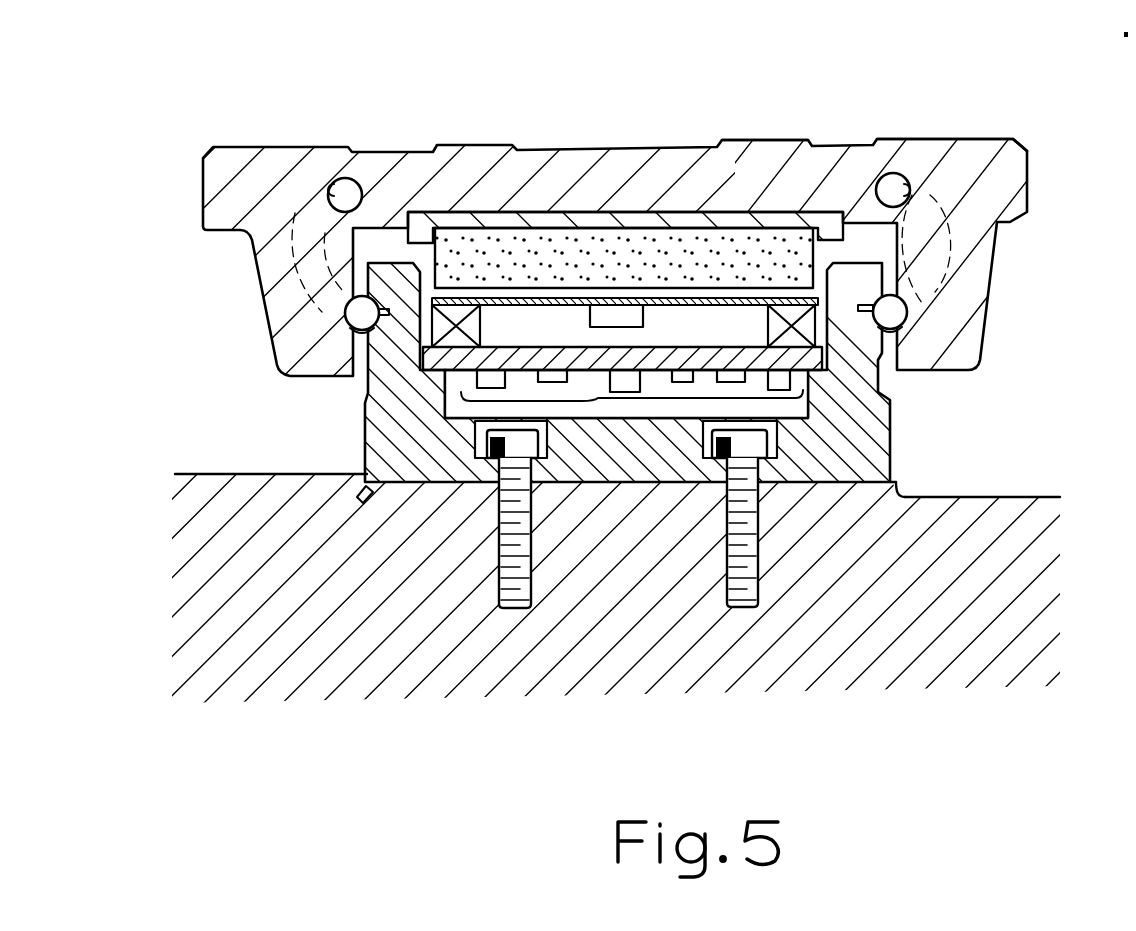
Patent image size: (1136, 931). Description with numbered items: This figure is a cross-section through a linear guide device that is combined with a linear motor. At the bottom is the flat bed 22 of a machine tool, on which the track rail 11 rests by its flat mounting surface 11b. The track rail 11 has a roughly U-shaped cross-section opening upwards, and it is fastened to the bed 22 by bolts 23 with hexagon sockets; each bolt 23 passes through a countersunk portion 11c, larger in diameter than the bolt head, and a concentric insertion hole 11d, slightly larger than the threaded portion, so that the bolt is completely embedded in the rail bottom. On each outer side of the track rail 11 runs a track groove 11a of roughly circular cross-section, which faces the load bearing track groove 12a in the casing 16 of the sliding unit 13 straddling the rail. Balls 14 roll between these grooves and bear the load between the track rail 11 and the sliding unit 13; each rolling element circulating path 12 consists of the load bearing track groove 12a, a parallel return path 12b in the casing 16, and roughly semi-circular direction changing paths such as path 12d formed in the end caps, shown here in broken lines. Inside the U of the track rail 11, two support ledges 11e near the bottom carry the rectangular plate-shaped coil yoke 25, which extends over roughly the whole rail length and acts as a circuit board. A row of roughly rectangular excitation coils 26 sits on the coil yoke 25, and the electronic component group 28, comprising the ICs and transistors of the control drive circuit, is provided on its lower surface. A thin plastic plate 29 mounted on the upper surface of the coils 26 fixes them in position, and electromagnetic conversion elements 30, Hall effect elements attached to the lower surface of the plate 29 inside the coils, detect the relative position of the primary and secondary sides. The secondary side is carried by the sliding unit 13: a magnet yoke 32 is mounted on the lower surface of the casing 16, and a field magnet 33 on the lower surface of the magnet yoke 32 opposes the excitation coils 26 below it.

The track rail 11 is at (895, 424).
The track groove 11a is at (347, 328).
The mounting surface 11b is at (872, 488).
The countersunk portion 11c is at (476, 456).
The insertion hole 11d is at (499, 507).
The support ledge 11e is at (442, 394).
The rolling element circulating path 12 is at (290, 215).
The load bearing track groove 12a is at (343, 307).
The return path 12b is at (330, 190).
The direction changing path 12d is at (300, 270).
The sliding unit 13 is at (948, 138).
The ball 14 is at (338, 182).
The casing 16 is at (770, 153).
The bed 22 is at (203, 473).
The bolt 23 is at (505, 610).
The coil yoke 25 is at (713, 347).
The excitation coil 26 is at (478, 323).
The electronic component group 28 is at (588, 400).
The thin plate 29 is at (807, 303).
The electromagnetic conversion element 30 is at (632, 310).
The magnet yoke 32 is at (676, 217).
The field magnet 33 is at (575, 247).